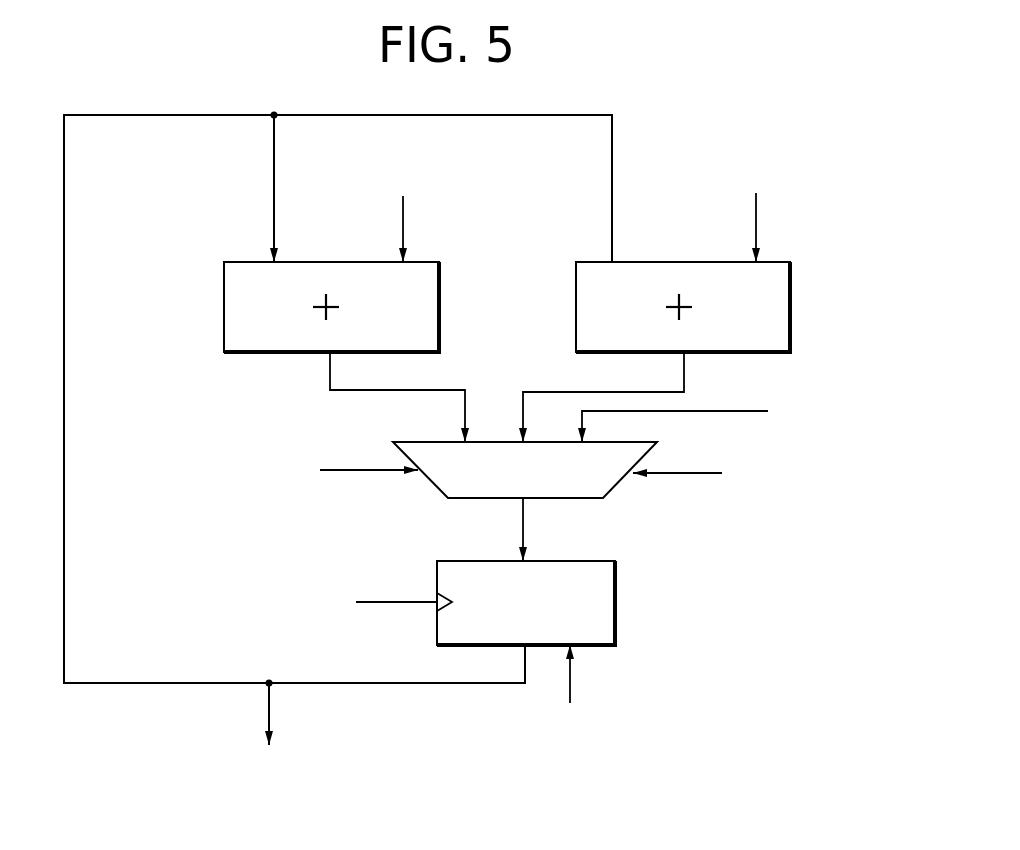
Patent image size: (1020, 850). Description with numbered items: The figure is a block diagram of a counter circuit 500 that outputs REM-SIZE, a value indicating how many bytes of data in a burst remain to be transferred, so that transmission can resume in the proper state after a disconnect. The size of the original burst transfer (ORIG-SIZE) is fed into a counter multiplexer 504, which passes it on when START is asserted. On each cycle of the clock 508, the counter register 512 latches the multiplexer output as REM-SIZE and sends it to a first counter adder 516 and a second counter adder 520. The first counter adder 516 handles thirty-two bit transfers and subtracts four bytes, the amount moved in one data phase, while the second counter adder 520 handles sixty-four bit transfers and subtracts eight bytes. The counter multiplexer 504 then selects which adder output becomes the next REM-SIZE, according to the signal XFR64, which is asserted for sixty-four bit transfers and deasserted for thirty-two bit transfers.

The counter circuit 500 is at (735, 66).
The counter multiplexer 504 is at (618, 440).
The clock 508 is at (386, 600).
The counter register 512 is at (563, 557).
The first counter adder 516 is at (442, 262).
The second counter adder 520 is at (773, 261).